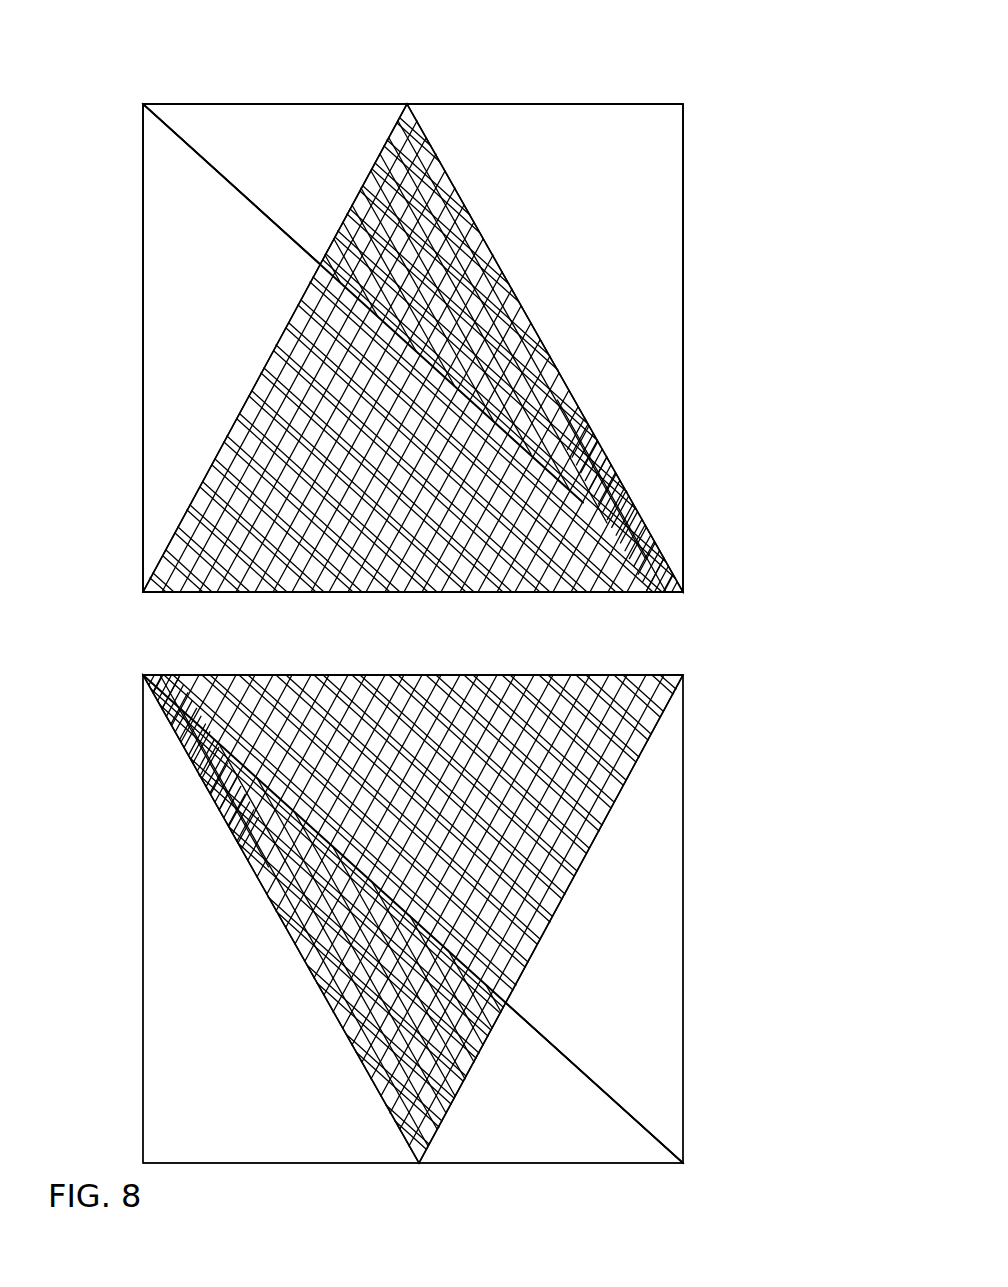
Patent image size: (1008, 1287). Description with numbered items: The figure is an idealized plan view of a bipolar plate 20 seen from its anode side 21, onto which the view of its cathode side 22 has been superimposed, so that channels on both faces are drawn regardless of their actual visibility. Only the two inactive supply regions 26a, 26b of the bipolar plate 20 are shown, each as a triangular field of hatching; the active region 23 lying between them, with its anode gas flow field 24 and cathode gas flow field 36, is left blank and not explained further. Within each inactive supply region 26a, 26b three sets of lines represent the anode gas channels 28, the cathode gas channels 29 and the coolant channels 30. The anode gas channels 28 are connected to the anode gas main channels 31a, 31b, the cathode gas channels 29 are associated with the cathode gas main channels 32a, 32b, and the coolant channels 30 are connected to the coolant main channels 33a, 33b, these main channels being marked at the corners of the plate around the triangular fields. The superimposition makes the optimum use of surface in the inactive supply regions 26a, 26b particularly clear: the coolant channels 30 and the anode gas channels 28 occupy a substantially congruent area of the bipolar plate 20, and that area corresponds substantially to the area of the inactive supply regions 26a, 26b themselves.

The bipolar plate 20 is at (694, 85).
The anode side 21 is at (413, 348).
The cathode side 22 is at (662, 198).
The active region 23 is at (682, 619).
The anode gas flow field 24 is at (427, 644).
The cathode gas flow field 36 is at (413, 633).
The inactive supply region 26a is at (617, 437).
The inactive supply region 26b is at (662, 734).
The anode gas channel 28 is at (357, 308).
The cathode gas channel 29 is at (250, 527).
The coolant channel 30 is at (623, 548).
The anode gas main channel 31a is at (324, 176).
The cathode gas main channel 32a is at (233, 308).
The coolant main channel 33a is at (609, 277).
The anode gas main channel 31b is at (539, 1122).
The cathode gas main channel 32b is at (614, 1007).
The coolant main channel 33b is at (249, 1016).